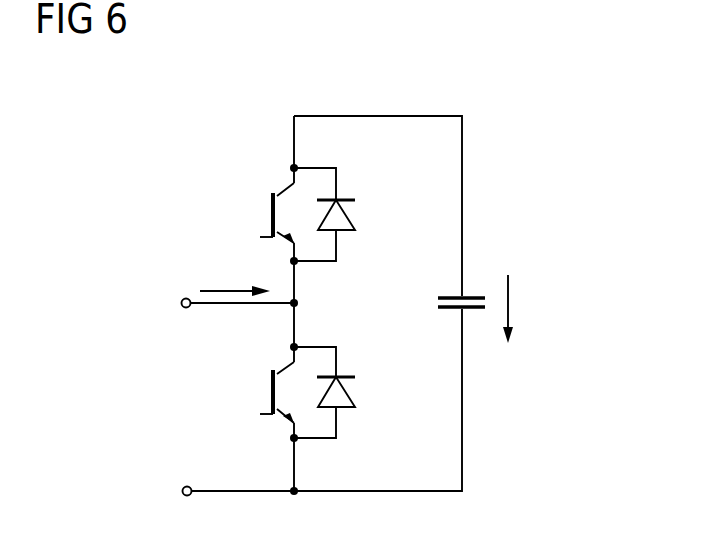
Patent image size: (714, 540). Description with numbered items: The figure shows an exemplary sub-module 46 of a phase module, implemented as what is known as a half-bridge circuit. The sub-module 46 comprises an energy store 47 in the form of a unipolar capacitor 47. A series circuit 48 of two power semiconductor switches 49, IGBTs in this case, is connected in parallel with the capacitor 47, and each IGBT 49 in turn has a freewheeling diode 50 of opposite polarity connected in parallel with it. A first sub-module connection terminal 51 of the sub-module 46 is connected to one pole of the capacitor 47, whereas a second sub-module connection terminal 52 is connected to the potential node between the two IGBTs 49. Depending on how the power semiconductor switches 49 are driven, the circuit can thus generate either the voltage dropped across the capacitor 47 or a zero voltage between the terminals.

The sub-module 46 is at (222, 125).
The energy store 47 is at (478, 296).
The series circuit 48 is at (367, 134).
The power semiconductor switch 49 is at (271, 197).
The freewheeling diode 50 is at (354, 216).
The first sub-module connection terminal 51 is at (182, 491).
The second sub-module connection terminal 52 is at (181, 303).